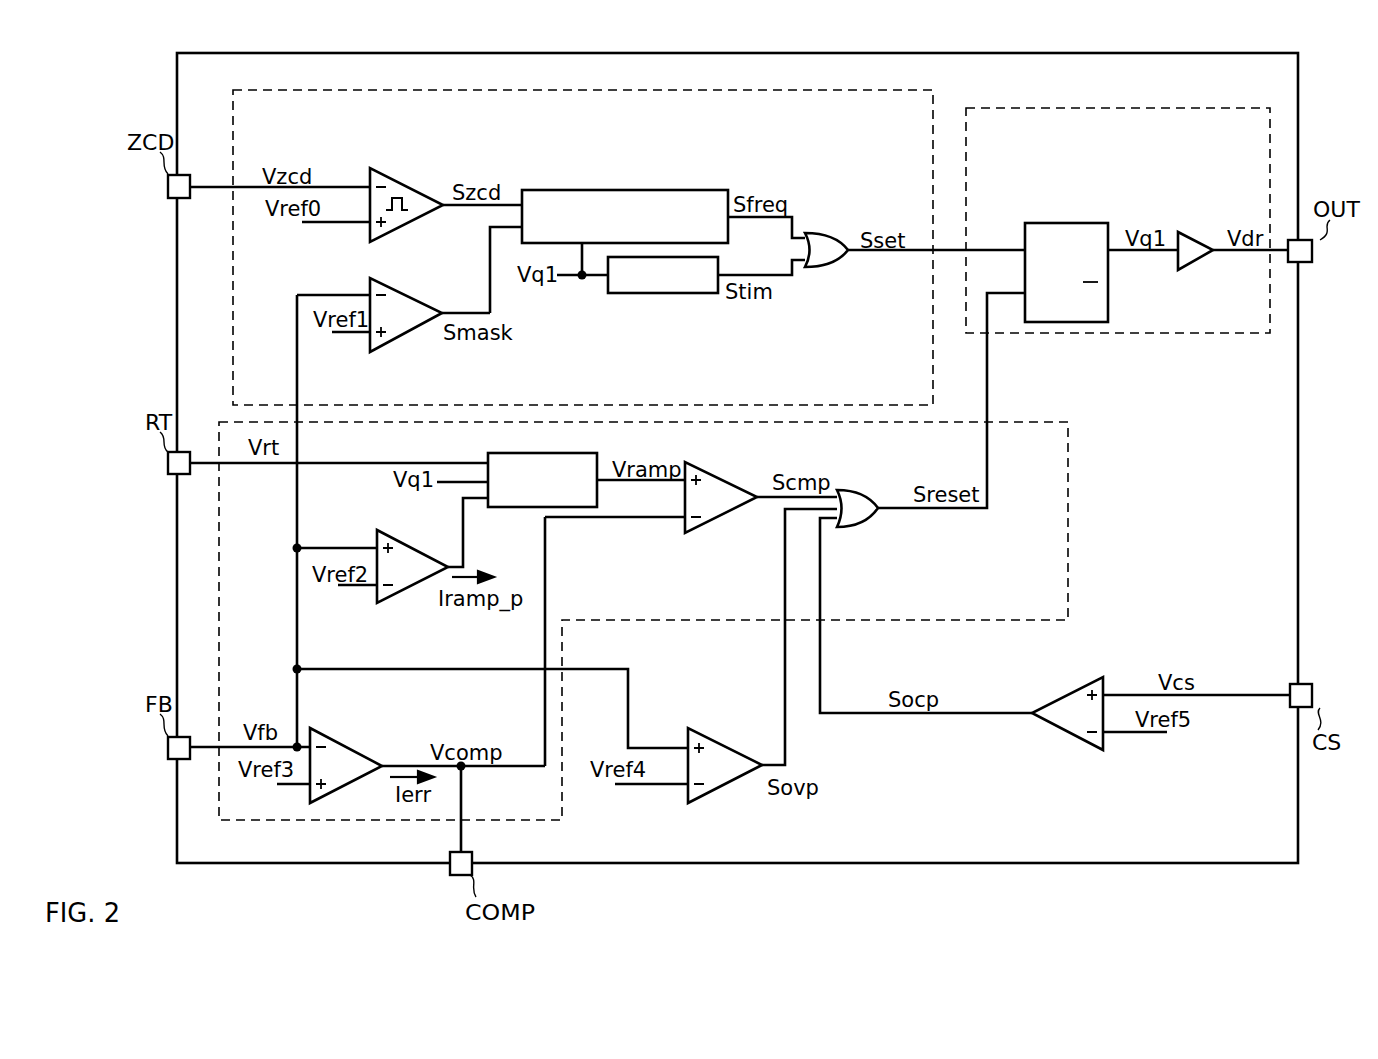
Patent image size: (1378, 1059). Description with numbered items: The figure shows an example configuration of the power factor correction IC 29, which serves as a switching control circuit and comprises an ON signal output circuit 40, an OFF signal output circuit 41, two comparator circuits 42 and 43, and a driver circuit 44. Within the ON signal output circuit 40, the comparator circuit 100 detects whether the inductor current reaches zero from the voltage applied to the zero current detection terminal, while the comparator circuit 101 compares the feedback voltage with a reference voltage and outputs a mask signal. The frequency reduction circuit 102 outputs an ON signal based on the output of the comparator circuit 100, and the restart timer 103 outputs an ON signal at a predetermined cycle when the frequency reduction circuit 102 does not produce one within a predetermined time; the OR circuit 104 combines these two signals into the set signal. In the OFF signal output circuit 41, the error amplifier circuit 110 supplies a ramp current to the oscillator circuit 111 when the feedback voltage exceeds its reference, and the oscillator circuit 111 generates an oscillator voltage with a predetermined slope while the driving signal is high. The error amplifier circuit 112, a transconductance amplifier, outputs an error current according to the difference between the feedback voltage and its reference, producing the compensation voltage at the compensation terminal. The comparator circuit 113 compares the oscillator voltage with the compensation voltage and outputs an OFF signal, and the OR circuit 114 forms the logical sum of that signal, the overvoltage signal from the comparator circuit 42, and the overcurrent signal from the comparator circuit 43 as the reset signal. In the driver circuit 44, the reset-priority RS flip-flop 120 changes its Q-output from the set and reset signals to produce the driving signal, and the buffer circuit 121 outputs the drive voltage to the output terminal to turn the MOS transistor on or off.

The power factor correction IC 29 is at (1108, 53).
The ON signal output circuit 40 is at (905, 90).
The OFF signal output circuit 41 is at (1018, 422).
The comparator circuit 42 is at (724, 744).
The comparator circuit 43 is at (1068, 690).
The driver circuit 44 is at (1175, 108).
The comparator circuit 100 is at (410, 180).
The comparator circuit 101 is at (382, 286).
The frequency reduction circuit 102 is at (603, 190).
The restart timer 103 is at (651, 293).
The OR circuit 104 is at (836, 233).
The error amplifier circuit 110 is at (411, 526).
The oscillator circuit 111 is at (510, 507).
The error amplifier circuit 112 is at (334, 733).
The comparator circuit 113 is at (748, 488).
The OR circuit 114 is at (870, 490).
The RS flip-flop 120 is at (1068, 223).
The buffer circuit 121 is at (1196, 232).